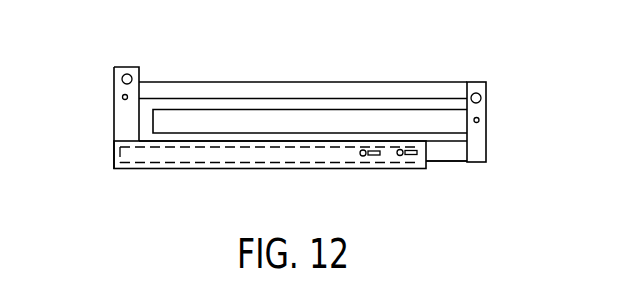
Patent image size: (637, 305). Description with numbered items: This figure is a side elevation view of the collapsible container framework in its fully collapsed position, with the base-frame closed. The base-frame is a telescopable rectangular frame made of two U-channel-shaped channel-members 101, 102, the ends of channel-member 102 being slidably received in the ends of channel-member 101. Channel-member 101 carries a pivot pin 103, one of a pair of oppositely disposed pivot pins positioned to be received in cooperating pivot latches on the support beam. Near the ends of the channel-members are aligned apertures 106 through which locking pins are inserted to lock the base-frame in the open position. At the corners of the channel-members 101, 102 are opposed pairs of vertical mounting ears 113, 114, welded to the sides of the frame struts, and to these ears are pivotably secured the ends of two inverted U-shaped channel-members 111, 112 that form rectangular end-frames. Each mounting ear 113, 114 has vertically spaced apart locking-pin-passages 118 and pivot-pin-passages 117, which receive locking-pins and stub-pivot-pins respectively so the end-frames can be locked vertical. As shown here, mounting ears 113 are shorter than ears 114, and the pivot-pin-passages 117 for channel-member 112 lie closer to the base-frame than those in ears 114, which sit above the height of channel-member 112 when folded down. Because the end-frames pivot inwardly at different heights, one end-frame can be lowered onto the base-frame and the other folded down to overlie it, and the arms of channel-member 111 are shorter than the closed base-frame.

The channel-member 101 is at (178, 169).
The channel-member 102 is at (442, 162).
The pivot pin 103 is at (402, 157).
The aperture 106 is at (365, 157).
The channel-member 111 is at (252, 80).
The channel-member 112 is at (297, 115).
The mounting ear 113 is at (486, 143).
The mounting ear 114 is at (114, 120).
The pivot-pin-passage 117 is at (122, 97).
The locking-pin-passage 118 is at (127, 74).